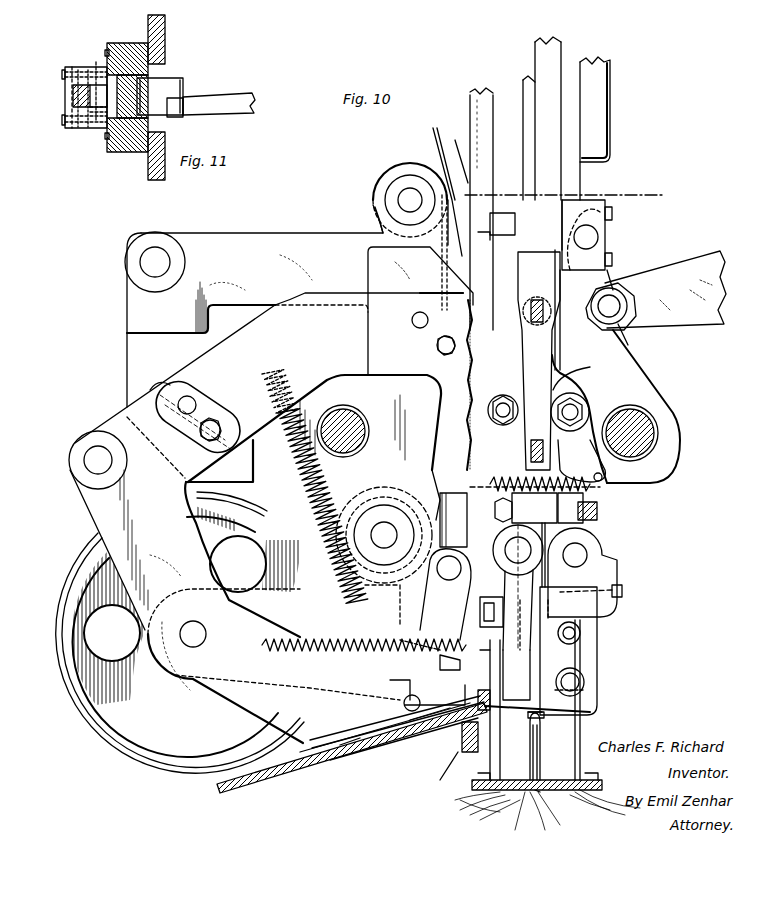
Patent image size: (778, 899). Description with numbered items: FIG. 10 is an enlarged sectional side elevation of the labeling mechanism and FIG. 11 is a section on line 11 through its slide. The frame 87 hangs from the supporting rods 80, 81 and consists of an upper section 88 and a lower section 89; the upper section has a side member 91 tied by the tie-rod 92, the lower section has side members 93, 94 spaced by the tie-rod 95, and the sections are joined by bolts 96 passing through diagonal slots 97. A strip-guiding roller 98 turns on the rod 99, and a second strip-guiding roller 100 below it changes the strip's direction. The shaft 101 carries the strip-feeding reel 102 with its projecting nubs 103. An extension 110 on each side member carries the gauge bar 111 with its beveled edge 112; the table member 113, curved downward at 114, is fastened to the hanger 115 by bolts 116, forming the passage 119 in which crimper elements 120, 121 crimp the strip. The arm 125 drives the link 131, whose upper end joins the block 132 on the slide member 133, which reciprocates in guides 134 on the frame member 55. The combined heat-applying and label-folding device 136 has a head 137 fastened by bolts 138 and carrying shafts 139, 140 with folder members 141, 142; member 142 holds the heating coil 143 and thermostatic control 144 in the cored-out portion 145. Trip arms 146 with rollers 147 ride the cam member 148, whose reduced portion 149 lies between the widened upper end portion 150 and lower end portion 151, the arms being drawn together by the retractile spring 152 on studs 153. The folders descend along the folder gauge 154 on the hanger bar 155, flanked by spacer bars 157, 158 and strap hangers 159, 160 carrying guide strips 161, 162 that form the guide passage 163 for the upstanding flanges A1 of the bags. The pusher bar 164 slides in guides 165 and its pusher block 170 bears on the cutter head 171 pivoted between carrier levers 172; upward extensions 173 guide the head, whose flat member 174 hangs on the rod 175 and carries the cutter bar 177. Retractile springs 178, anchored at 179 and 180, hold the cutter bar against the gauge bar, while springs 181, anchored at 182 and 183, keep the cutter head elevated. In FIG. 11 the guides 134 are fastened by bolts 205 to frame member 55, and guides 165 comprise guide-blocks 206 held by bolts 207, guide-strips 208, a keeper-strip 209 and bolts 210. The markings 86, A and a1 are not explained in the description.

In FIG. 10, the section line 11 is at (457, 148).
In FIG. 11, the longitudinal frame member 55 is at (168, 40).
In FIG. 10, the longitudinal frame member 55 is at (606, 140).
In FIG. 10, the supporting rod 80 is at (645, 428).
In FIG. 10, the supporting rod 81 is at (355, 415).
In FIG. 10, the rod 86 is at (433, 140).
In FIG. 10, the frame 87 is at (117, 408).
In FIG. 10, the upper section 88 is at (276, 233).
In FIG. 10, the lower section 89 is at (108, 512).
In FIG. 10, the side member 91 is at (344, 233).
In FIG. 10, the tie-rod 92 is at (160, 262).
In FIG. 10, the side member 93 is at (400, 685).
In FIG. 10, the side member 94 is at (247, 697).
In FIG. 10, the tie-rod 95 is at (83, 462).
In FIG. 10, the bolts 96 is at (214, 425).
In FIG. 10, the diagonal slots 97 is at (168, 378).
In FIG. 10, the strip-guiding roller 98 is at (383, 193).
In FIG. 10, the rod 99 is at (410, 200).
In FIG. 10, the strip-guiding roller 100 is at (356, 523).
In FIG. 10, the shaft 101 is at (198, 630).
In FIG. 10, the strip-feeding reel 102 is at (83, 683).
In FIG. 10, the projecting nubs 103 is at (263, 753).
In FIG. 10, the extension 110 is at (459, 752).
In FIG. 10, the gauge bar 111 is at (482, 752).
In FIG. 10, the beveled edge 112 is at (480, 737).
In FIG. 10, the table member 113 is at (362, 755).
In FIG. 10, the curved portion 114 is at (282, 777).
In FIG. 10, the hanger 115 is at (335, 770).
In FIG. 10, the bolts 116 is at (405, 703).
In FIG. 10, the passage 119 is at (386, 765).
In FIG. 10, the crimper elements 120 is at (355, 730).
In FIG. 10, the crimper elements 121 is at (420, 758).
In FIG. 11, the arm 125 is at (232, 93).
In FIG. 10, the arm 125 is at (706, 301).
In FIG. 11, the link 131 is at (172, 82).
In FIG. 10, the link 131 is at (612, 245).
In FIG. 11, the block 132 is at (172, 114).
In FIG. 10, the block 132 is at (592, 212).
In FIG. 11, the slide member 133 is at (110, 150).
In FIG. 10, the slide member 133 is at (552, 120).
In FIG. 11, the guides 134 is at (122, 52).
In FIG. 10, the guides 134 is at (565, 170).
In FIG. 10, the combined heat-applying and label-folding device 136 is at (583, 528).
In FIG. 10, the head 137 is at (600, 497).
In FIG. 10, the bolts 138 is at (596, 506).
In FIG. 10, the shaft 139 is at (515, 560).
In FIG. 10, the shaft 140 is at (580, 553).
In FIG. 10, the folder member 141 is at (522, 660).
In FIG. 10, the folder member 142 is at (596, 645).
In FIG. 10, the electric heating coil 143 is at (584, 670).
In FIG. 10, the thermostatic control 144 is at (580, 628).
In FIG. 10, the cored-out portion 145 is at (590, 690).
In FIG. 10, the trip arms 146 is at (496, 478).
In FIG. 10, the rollers 147 is at (565, 400).
In FIG. 10, the cam member 148 is at (566, 346).
In FIG. 10, the reduced portion 149 is at (585, 374).
In FIG. 10, the widened upper end portion 150 is at (522, 343).
In FIG. 10, the widened lower end portion 151 is at (605, 540).
In FIG. 10, the retractile spring 152 is at (575, 470).
In FIG. 10, the studs 153 is at (668, 483).
In FIG. 10, the folder gauge 154 is at (542, 722).
In FIG. 10, the hanger bar 155 is at (550, 718).
In FIG. 10, the spacer bar 157 is at (480, 637).
In FIG. 10, the spacer bar 158 is at (625, 590).
In FIG. 10, the strap hanger 159 is at (493, 775).
In FIG. 10, the strap hanger 160 is at (578, 742).
In FIG. 10, the guide strip 161 is at (500, 795).
In FIG. 10, the guide strip 162 is at (590, 793).
In FIG. 10, the guide passage 163 is at (515, 830).
In FIG. 11, the pusher bar 164 is at (73, 102).
In FIG. 10, the pusher bar 164 is at (486, 163).
In FIG. 11, the guides 165 is at (96, 128).
In FIG. 10, the guides 165 is at (510, 214).
In FIG. 10, the pusher block 170 is at (430, 520).
In FIG. 10, the cutter head 171 is at (466, 520).
In FIG. 10, the carrier levers 172 is at (296, 585).
In FIG. 10, the upward extensions 173 is at (475, 703).
In FIG. 10, the flat member 174 is at (394, 605).
In FIG. 10, the rod 175 is at (440, 575).
In FIG. 10, the cutter bar 177 is at (512, 655).
In FIG. 10, the retractile springs 178 is at (412, 639).
In FIG. 10, the spring attachment 179 is at (460, 680).
In FIG. 10, the spring attachment 180 is at (287, 681).
In FIG. 10, the retractile springs 181 is at (302, 493).
In FIG. 10, the spring attachment 182 is at (266, 370).
In FIG. 10, the spring attachment 183 is at (370, 640).
In FIG. 11, the bolts 205 is at (98, 140).
In FIG. 11, the guide-blocks 206 is at (96, 62).
In FIG. 11, the bolts 207 is at (88, 130).
In FIG. 11, the guide-strips 208 is at (76, 128).
In FIG. 11, the keeper-strip 209 is at (73, 108).
In FIG. 11, the bolts 210 is at (65, 125).
In FIG. 10, the brush A is at (460, 813).
In FIG. 10, the upstanding folds or flanges A1 is at (540, 755).
In FIG. 10, the brush tip a1 is at (540, 800).